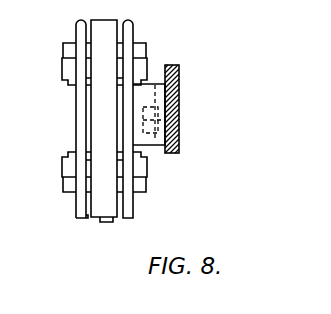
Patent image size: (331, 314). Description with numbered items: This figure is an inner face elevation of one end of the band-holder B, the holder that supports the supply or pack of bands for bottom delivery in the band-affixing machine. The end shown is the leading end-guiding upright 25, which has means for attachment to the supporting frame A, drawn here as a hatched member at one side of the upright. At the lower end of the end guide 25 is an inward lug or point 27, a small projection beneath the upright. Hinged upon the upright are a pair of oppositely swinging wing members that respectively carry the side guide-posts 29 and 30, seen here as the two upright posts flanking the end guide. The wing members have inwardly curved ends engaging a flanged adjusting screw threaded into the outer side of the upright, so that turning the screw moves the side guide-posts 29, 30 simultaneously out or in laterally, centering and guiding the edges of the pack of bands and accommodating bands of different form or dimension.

The frames A is at (180, 107).
The holder B is at (100, 117).
The end-guiding upright 25 is at (108, 155).
The inward lug or point 27 is at (107, 222).
The side guide-post 29 is at (82, 117).
The side guide-post 30 is at (128, 200).